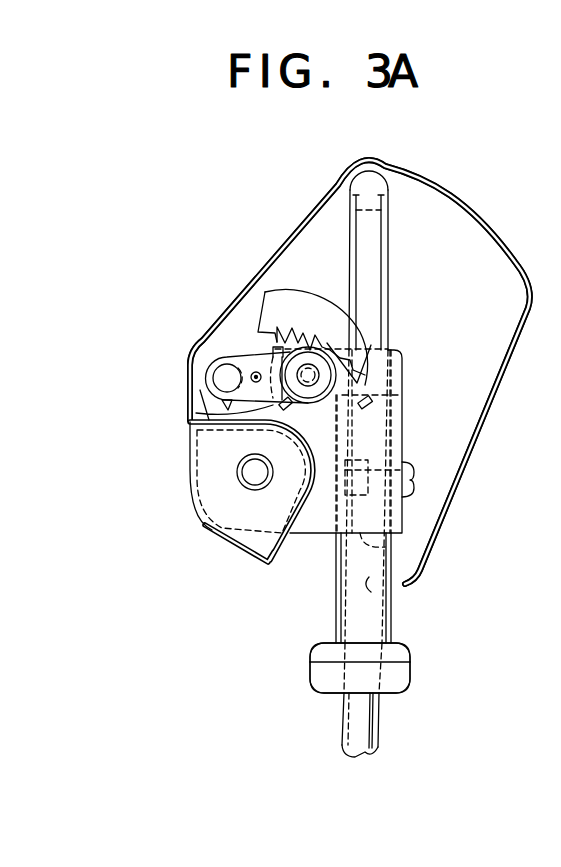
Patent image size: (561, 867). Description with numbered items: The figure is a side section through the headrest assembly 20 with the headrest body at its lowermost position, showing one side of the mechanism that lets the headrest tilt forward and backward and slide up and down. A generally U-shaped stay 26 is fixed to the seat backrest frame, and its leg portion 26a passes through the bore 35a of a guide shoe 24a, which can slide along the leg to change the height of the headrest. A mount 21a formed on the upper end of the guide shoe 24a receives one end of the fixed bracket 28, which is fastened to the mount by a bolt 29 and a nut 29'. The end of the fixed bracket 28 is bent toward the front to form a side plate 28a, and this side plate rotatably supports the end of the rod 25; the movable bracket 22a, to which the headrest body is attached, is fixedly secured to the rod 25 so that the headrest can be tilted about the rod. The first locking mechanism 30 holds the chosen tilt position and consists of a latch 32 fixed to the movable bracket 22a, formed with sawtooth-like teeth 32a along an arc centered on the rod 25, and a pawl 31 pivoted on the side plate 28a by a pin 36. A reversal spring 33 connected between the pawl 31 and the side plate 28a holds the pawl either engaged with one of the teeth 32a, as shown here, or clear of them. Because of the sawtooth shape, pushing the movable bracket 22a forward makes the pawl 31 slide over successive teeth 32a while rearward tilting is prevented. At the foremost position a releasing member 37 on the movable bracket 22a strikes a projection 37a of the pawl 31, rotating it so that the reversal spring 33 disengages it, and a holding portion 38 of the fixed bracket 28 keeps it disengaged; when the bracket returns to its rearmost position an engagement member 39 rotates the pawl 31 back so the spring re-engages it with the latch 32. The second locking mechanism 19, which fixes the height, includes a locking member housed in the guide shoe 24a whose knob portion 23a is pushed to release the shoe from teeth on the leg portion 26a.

The second locking mechanism 19 is at (413, 668).
The headrest assembly 20 is at (463, 197).
The mount 21a is at (378, 408).
The movable bracket 22a is at (490, 233).
The knob portion 23a is at (397, 683).
The guide shoe 24a is at (408, 643).
The rod 25 is at (237, 472).
The stay 26 is at (383, 718).
The leg portion 26a is at (345, 722).
The fixed bracket 28 is at (402, 350).
The side plate 28a is at (310, 522).
The bolt 29 is at (428, 462).
The nut 29' is at (435, 529).
The first locking mechanism 30 is at (254, 326).
The pawl 31 is at (252, 353).
The latch 32 is at (285, 303).
The teeth 32a is at (306, 300).
The reversal spring 33 is at (207, 362).
The bore 35a is at (377, 588).
The pin 36 is at (312, 403).
The releasing member 37 is at (375, 397).
The projection 37a is at (320, 350).
The holding portion 38 is at (188, 410).
The engagement member 39 is at (262, 355).